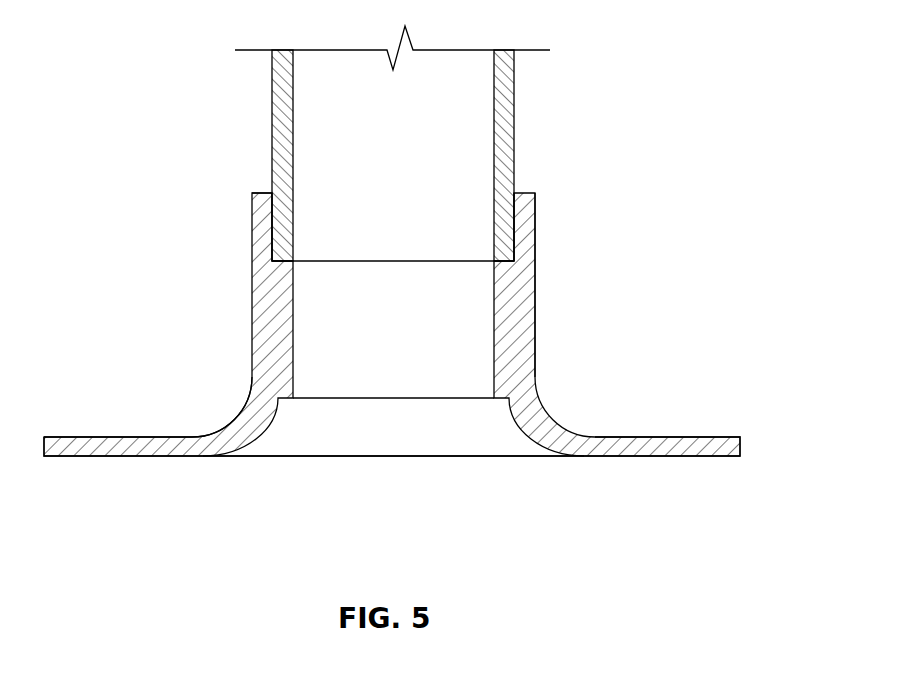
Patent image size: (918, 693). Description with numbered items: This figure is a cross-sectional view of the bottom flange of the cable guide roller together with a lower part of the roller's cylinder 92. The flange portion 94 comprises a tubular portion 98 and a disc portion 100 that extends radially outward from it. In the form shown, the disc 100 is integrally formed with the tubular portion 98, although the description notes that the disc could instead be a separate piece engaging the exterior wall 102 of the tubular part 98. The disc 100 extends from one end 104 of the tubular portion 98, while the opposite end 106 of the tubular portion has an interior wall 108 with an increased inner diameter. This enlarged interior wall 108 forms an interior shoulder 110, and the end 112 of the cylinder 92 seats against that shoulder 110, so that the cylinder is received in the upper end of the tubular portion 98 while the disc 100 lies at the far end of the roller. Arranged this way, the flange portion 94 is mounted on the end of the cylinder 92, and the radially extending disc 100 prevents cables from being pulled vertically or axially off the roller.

The cylinder 92 is at (505, 72).
The flange portion 94 is at (388, 271).
The tubular portion 98 is at (518, 320).
The disc portion 100 is at (685, 440).
The exterior wall 102 is at (535, 357).
The end of the tubular portion 104 is at (268, 390).
The opposite end of the tubular portion 106 is at (268, 192).
The interior wall 108 is at (514, 229).
The interior shoulder 110 is at (270, 231).
The end of the cylinder 112 is at (353, 263).